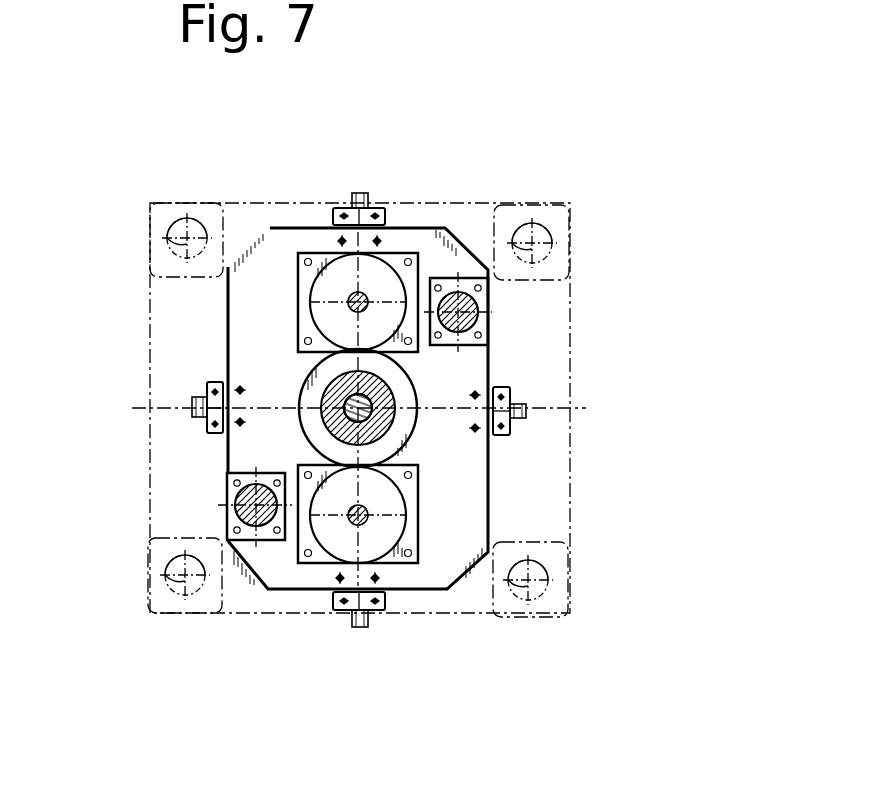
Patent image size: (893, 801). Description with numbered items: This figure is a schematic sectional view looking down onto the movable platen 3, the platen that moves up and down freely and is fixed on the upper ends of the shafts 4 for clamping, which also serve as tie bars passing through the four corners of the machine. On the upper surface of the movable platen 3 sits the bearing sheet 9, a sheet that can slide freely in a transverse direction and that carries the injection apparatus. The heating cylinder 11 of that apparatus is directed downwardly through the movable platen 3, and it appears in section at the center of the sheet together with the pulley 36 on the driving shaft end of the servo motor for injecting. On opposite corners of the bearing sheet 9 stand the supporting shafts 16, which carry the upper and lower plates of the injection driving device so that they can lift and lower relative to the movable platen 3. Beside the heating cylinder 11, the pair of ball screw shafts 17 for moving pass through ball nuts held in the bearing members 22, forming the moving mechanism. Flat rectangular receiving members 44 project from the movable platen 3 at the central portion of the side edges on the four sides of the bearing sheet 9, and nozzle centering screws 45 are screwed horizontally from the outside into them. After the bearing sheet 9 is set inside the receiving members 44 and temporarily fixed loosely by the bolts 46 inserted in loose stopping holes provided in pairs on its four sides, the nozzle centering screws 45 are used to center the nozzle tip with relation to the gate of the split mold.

The movable platen 3 is at (187, 323).
The shafts for clamping 4 is at (180, 230).
The bearing sheet 9 is at (458, 483).
The heating cylinder 11 is at (372, 412).
The supporting shafts 16 is at (483, 312).
The ball screw shafts for moving 17 is at (366, 294).
The bearing members 22 is at (335, 250).
The pulley 36 is at (412, 380).
The receiving members 44 is at (365, 192).
The nozzle centering screws 45 is at (378, 206).
The bolts 46 is at (342, 236).